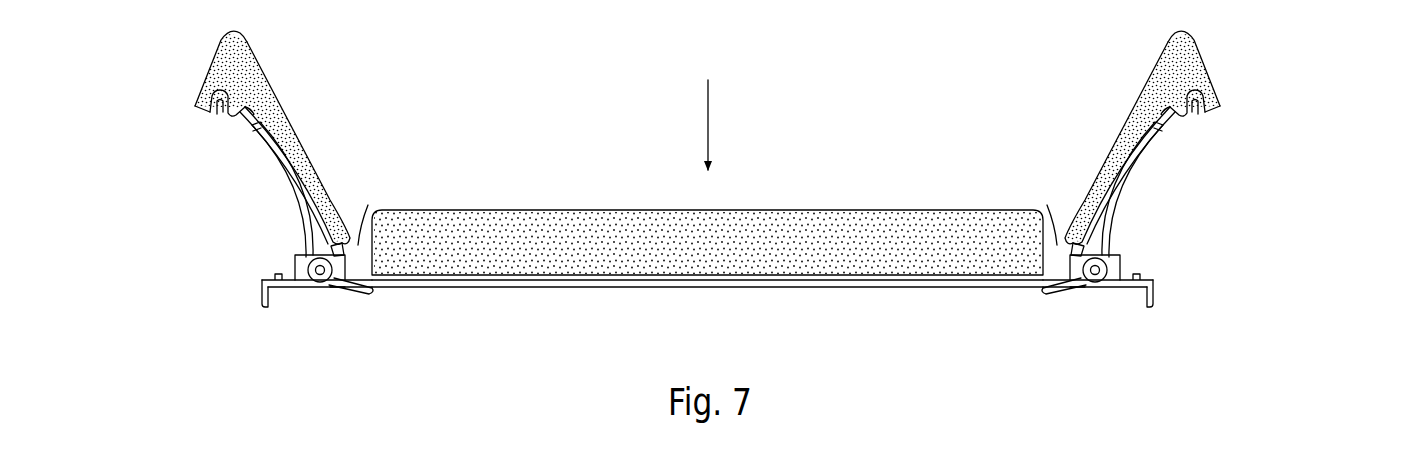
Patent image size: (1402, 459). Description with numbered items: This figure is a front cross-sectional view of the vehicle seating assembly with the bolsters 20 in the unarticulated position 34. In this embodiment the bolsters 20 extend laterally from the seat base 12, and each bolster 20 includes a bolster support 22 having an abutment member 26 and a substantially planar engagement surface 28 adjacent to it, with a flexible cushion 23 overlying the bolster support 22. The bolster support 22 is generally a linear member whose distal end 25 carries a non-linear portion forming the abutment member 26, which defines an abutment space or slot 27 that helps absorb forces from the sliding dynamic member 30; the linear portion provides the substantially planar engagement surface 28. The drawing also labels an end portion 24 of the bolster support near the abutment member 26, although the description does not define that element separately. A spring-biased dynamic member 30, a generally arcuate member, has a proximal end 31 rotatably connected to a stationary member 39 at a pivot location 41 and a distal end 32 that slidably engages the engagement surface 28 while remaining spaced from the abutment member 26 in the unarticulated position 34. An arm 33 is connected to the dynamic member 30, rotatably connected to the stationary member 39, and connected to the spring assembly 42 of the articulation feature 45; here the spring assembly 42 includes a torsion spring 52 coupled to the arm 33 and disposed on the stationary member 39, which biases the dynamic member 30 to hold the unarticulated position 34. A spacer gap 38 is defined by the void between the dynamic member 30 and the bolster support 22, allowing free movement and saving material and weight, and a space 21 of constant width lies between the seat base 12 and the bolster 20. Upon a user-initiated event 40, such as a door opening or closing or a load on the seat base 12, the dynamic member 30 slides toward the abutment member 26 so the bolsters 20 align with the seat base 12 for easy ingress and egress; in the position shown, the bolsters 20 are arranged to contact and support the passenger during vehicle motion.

The seat base 12 is at (690, 283).
The bolster 20 is at (691, 144).
The space 21 is at (368, 205).
The bolster support 22 is at (333, 183).
The flexible cushion 23 is at (247, 40).
The end portion 24 is at (195, 106).
The distal end 25 is at (252, 116).
The abutment member 26 is at (235, 122).
The abutment space 27 is at (213, 115).
The substantially planar engagement surface 28 is at (287, 167).
The spring-biased dynamic member 30 is at (290, 192).
The proximal end 31 is at (296, 258).
The distal end 32 is at (268, 133).
The arm 33 is at (374, 294).
The unarticulated position 34 is at (707, 296).
The spacer gap 38 is at (330, 226).
The stationary member 39 is at (289, 296).
The user-initiated event 40 is at (710, 128).
The pivot location 41 is at (311, 269).
The spring assembly 42 is at (306, 289).
The articulation feature 45 is at (324, 310).
The torsion spring 52 is at (336, 292).